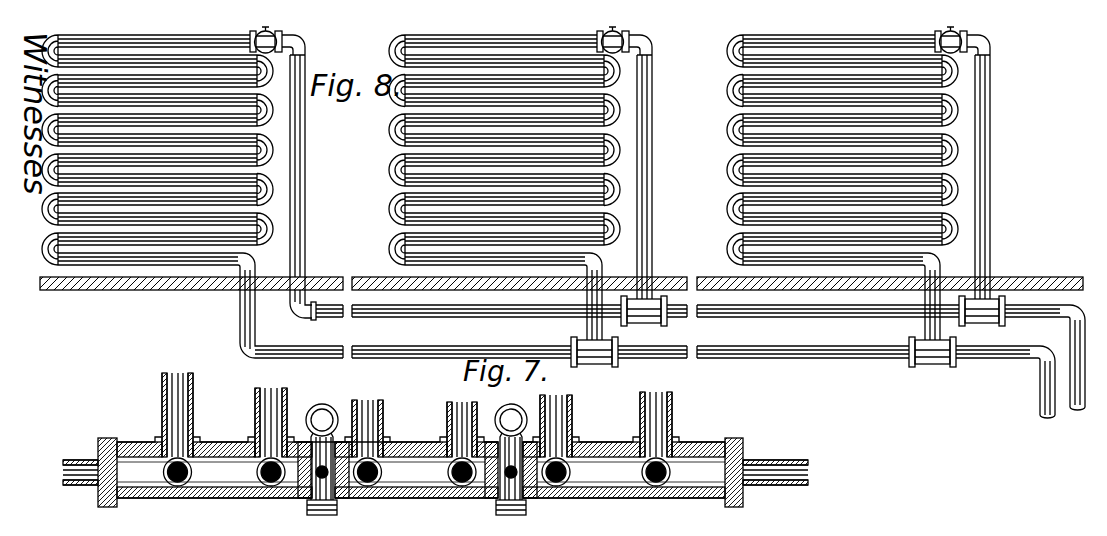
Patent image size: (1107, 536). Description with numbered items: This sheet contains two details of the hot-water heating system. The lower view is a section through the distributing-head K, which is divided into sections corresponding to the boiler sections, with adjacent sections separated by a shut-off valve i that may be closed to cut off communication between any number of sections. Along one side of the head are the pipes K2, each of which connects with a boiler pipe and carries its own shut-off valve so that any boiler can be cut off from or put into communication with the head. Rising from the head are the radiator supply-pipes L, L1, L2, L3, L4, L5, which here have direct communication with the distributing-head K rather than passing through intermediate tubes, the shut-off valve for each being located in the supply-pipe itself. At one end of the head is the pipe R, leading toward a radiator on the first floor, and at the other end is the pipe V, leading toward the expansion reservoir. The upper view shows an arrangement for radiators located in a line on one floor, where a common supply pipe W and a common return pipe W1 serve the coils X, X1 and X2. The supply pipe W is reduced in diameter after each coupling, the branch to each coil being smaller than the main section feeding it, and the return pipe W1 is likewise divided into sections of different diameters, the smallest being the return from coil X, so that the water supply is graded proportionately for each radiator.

In FIG. 8, the radiator X is at (845, 152).
In FIG. 8, the radiator X1 is at (500, 152).
In FIG. 8, the radiator X2 is at (162, 152).
In FIG. 8, the supply pipe W is at (698, 343).
In FIG. 8, the return pipe W1 is at (647, 347).
In FIG. 7, the distributing-head K is at (420, 472).
In FIG. 7, the pipes K2 is at (187, 498).
In FIG. 7, the supply-pipe L is at (665, 424).
In FIG. 7, the supply-pipe L1 is at (569, 426).
In FIG. 7, the supply-pipe L2 is at (449, 429).
In FIG. 7, the supply-pipe L3 is at (379, 428).
In FIG. 7, the supply-pipe L4 is at (254, 422).
In FIG. 7, the supply-pipe L5 is at (163, 415).
In FIG. 7, the shut-off valve i is at (416, 449).
In FIG. 7, the pipe R is at (80, 462).
In FIG. 7, the pipe V is at (805, 432).